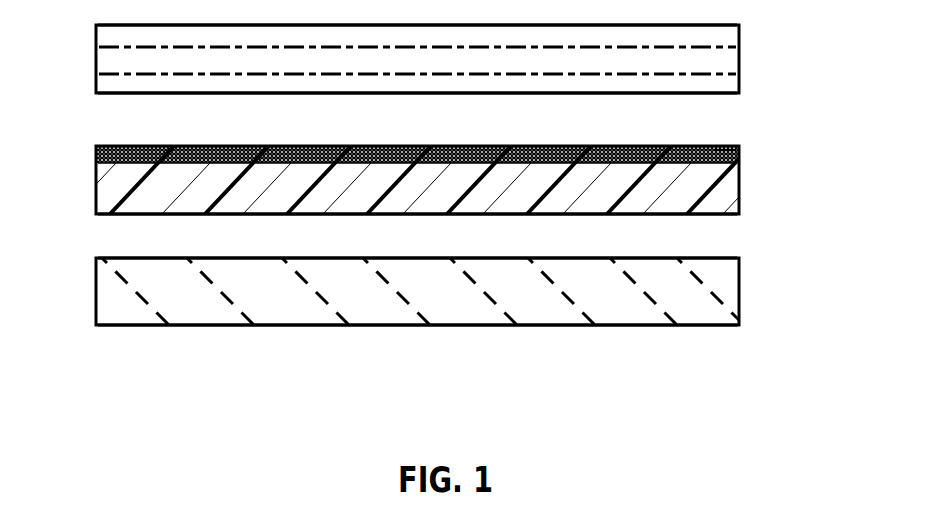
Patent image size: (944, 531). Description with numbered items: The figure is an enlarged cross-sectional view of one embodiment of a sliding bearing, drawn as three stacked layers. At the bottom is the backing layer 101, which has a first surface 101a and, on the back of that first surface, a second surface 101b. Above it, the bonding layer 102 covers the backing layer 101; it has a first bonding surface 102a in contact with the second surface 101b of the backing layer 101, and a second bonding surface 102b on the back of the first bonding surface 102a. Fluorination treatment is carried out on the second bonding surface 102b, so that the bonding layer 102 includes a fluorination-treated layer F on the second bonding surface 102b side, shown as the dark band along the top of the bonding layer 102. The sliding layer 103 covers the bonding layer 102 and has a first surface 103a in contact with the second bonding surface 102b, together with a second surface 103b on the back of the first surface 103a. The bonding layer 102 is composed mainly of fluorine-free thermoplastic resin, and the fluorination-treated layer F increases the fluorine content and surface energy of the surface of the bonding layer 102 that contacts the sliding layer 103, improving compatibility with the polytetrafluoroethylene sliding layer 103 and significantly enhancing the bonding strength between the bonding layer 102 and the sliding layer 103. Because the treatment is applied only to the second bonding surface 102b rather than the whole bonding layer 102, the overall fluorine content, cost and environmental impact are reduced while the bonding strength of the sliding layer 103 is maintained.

The backing layer 101 is at (393, 291).
The first surface 101a is at (705, 325).
The second surface 101b is at (705, 257).
The bonding layer 102 is at (404, 180).
The first bonding surface 102a is at (705, 214).
The second bonding surface 102b is at (705, 145).
The sliding layer 103 is at (387, 59).
The first surface 103a is at (705, 93).
The second surface 103b is at (705, 23).
The fluorination-treated layer F is at (740, 157).